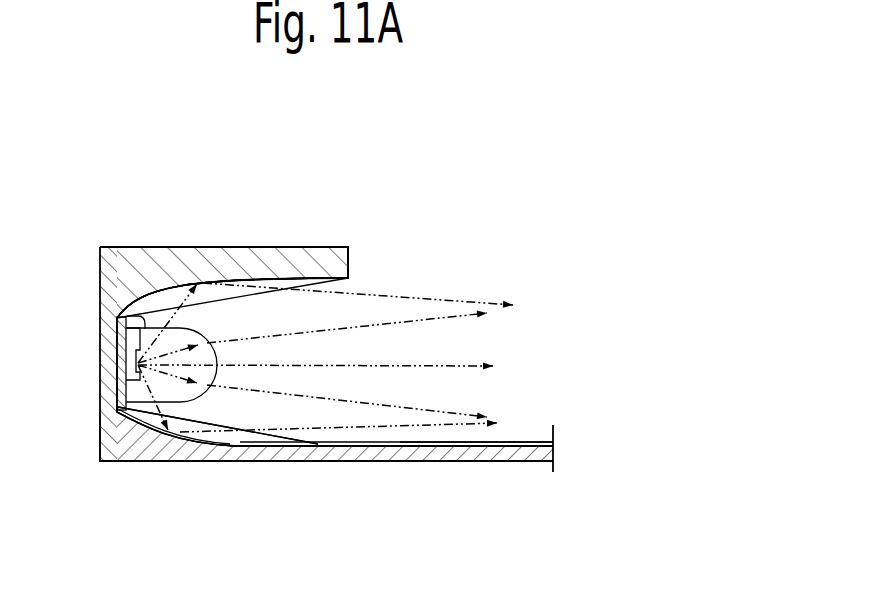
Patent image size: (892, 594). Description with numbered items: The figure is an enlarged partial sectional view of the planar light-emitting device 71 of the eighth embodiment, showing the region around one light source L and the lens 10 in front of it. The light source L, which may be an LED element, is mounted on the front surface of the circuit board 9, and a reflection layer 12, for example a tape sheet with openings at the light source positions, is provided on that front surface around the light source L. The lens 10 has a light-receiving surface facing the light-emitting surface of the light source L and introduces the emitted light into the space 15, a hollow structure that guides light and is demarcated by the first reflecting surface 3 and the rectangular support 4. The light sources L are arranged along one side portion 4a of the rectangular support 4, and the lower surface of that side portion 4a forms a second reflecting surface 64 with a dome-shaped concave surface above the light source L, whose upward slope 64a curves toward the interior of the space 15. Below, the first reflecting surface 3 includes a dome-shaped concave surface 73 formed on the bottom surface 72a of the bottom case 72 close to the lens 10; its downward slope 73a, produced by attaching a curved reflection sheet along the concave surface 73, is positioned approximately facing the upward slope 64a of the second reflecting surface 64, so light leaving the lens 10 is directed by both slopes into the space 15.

The planar light-emitting device 71 is at (467, 191).
The rectangular support 4 is at (280, 247).
The side portion 4a is at (330, 257).
The bottom case 72 is at (540, 462).
The bottom surface 72a is at (216, 448).
The second reflecting surface 64 is at (322, 287).
The upward slope 64a is at (250, 282).
The dome-shaped concave surface 73 is at (196, 426).
The downward slope 73a is at (282, 433).
The first reflecting surface 3 is at (540, 441).
The space 15 is at (469, 434).
The reflection layer 12 is at (117, 318).
The circuit board 9 is at (117, 364).
The lens 10 is at (203, 338).
The light source L is at (118, 316).